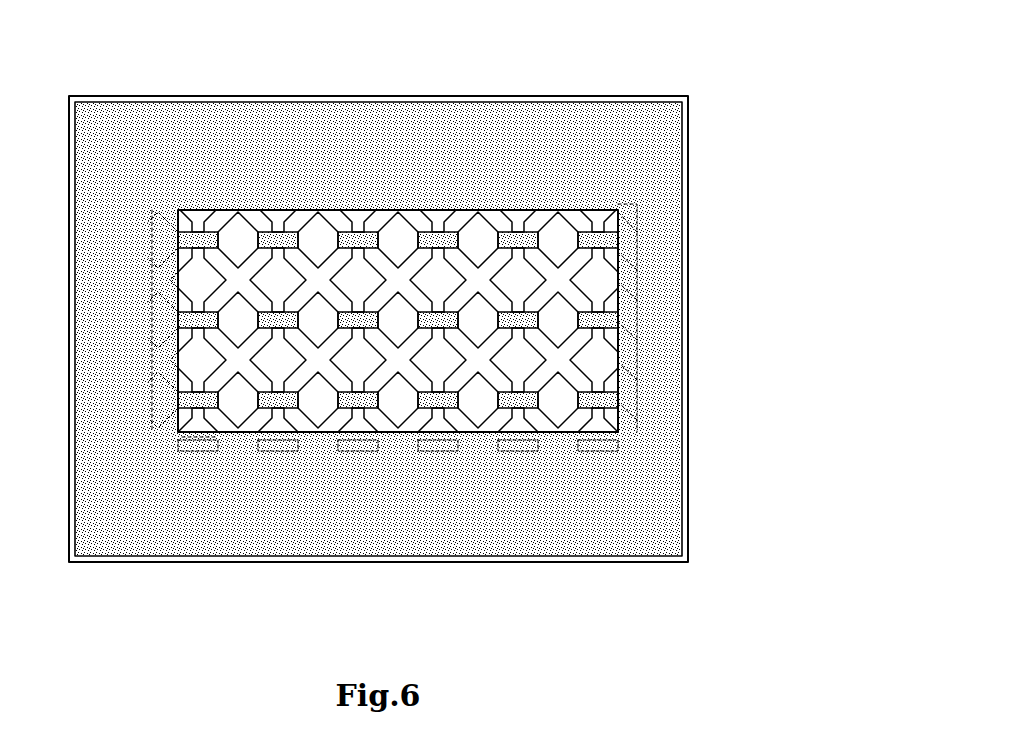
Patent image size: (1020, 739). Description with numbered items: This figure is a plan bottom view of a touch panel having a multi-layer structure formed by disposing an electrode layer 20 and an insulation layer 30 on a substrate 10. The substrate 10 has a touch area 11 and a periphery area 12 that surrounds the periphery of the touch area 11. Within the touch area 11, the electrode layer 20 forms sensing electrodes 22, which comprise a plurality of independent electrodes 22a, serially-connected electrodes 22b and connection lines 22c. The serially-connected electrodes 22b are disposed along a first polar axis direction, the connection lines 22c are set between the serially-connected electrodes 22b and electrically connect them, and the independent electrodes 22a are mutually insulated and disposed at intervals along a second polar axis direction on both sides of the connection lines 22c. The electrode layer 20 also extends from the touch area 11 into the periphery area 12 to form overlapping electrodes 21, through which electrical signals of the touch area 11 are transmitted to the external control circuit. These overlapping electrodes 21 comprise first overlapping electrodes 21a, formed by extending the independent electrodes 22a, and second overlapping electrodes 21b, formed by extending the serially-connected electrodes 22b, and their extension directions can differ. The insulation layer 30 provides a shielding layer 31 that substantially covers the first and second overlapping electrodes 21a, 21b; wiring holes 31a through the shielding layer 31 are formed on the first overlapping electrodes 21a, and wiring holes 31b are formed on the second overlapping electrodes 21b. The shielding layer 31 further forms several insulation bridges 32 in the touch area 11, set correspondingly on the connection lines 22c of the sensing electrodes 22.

The substrate 10 is at (690, 193).
The touch area 11 is at (628, 431).
The periphery area 12 is at (686, 503).
The electrode layer 20 is at (351, 518).
The overlapping electrodes 21 is at (191, 518).
The first overlapping electrodes 21a is at (170, 392).
The second overlapping electrodes 21b is at (200, 446).
The sensing electrodes 22 is at (477, 266).
The independent electrodes 22a is at (604, 296).
The serially-connected electrodes 22b is at (612, 368).
The connection lines 22c is at (562, 312).
The insulation layer 30 is at (477, 266).
The shielding layer 31 is at (600, 128).
The wiring holes 31a is at (152, 400).
The wiring holes 31b is at (197, 446).
The insulation bridges 32 is at (356, 233).